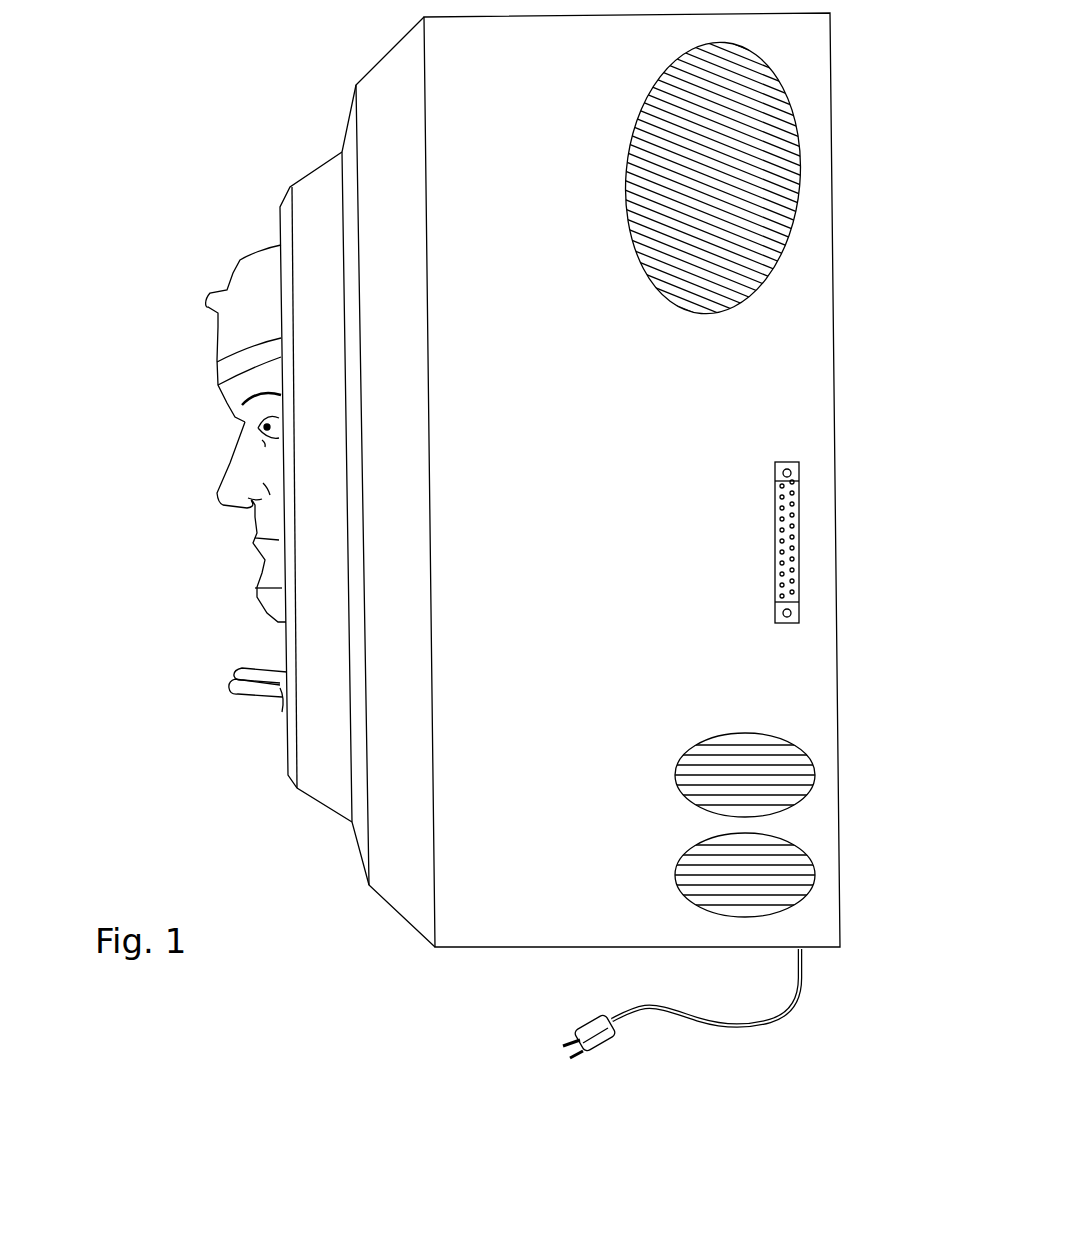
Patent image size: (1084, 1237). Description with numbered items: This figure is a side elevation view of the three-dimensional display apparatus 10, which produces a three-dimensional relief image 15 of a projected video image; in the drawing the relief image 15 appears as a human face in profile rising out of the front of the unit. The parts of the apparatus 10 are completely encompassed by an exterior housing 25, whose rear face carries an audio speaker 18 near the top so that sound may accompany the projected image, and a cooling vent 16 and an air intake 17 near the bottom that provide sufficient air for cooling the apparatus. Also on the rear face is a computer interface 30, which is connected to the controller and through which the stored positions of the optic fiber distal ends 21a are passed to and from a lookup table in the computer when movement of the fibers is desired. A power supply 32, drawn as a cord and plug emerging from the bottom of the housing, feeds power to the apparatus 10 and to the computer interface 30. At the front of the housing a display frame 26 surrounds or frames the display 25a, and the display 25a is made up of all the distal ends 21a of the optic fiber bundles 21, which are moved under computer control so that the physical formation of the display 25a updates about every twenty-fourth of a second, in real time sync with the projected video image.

The apparatus 10 is at (300, 138).
The three-dimensional relief image 15 is at (217, 375).
The cooling vent 16 is at (815, 885).
The air intake 17 is at (810, 792).
The audio speaker 18 is at (797, 163).
The optic fiber bundles 21 is at (282, 587).
The optic fiber bundle distal ends 21a is at (215, 487).
The exterior housing 25 is at (393, 910).
The display 25a is at (235, 270).
The display frame 26 is at (288, 783).
The computer interface 30 is at (798, 525).
The power supply 32 is at (783, 1012).